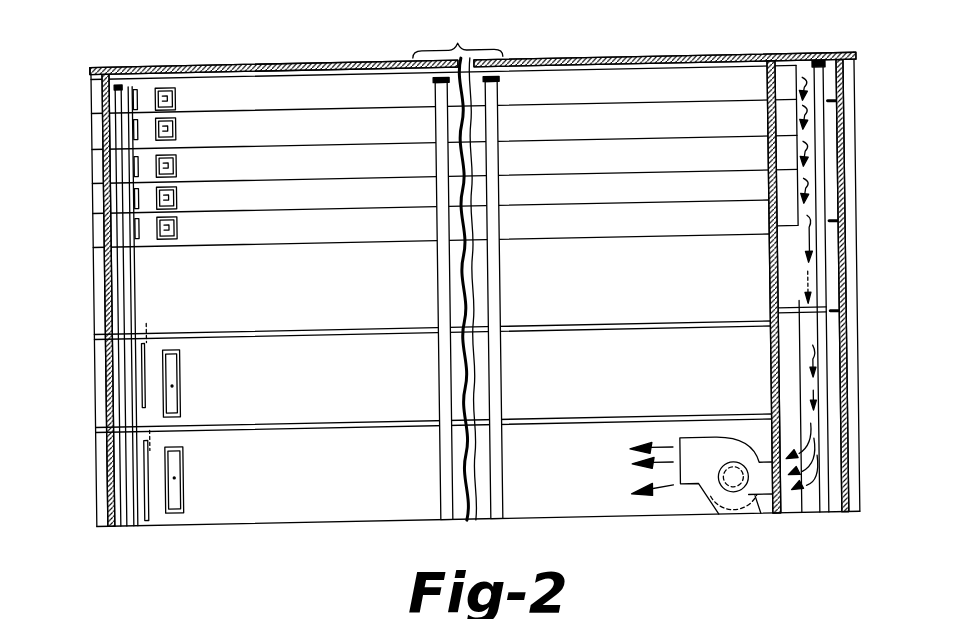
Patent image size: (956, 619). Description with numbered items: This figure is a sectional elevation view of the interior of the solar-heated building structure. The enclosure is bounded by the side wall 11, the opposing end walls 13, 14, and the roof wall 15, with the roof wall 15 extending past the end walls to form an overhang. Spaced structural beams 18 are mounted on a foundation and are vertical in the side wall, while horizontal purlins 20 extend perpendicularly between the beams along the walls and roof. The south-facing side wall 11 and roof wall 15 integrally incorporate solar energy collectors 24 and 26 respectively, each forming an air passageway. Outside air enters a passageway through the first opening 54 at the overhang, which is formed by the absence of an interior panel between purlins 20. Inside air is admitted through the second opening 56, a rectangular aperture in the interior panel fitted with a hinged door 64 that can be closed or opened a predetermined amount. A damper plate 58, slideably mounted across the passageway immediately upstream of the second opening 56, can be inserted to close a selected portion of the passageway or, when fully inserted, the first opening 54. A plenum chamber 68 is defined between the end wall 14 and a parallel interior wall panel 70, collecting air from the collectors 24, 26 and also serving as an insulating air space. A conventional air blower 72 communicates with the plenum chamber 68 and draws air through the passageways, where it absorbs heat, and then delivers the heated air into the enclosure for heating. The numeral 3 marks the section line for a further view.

The side wall 11 is at (327, 528).
The end wall 13 is at (100, 491).
The end wall 14 is at (845, 497).
The roof wall 15 is at (316, 54).
The first opening 54 is at (92, 95).
The roof wall solar energy collector 26 is at (616, 122).
The purlin 20 is at (115, 335).
The section line for FIG. 3 is at (159, 325).
The structural beam 18 is at (449, 515).
The damper plate 58 is at (150, 190).
The second opening 56 is at (178, 154).
The door 64 is at (178, 219).
The side wall solar energy collector 24 is at (361, 370).
The plenum chamber 68 is at (790, 280).
The interior wall panel 70 is at (770, 371).
The air blower 72 is at (713, 455).